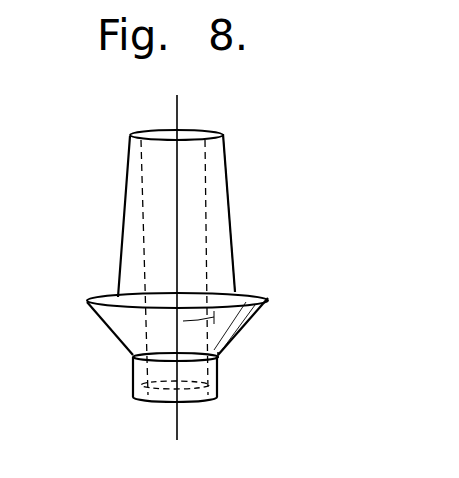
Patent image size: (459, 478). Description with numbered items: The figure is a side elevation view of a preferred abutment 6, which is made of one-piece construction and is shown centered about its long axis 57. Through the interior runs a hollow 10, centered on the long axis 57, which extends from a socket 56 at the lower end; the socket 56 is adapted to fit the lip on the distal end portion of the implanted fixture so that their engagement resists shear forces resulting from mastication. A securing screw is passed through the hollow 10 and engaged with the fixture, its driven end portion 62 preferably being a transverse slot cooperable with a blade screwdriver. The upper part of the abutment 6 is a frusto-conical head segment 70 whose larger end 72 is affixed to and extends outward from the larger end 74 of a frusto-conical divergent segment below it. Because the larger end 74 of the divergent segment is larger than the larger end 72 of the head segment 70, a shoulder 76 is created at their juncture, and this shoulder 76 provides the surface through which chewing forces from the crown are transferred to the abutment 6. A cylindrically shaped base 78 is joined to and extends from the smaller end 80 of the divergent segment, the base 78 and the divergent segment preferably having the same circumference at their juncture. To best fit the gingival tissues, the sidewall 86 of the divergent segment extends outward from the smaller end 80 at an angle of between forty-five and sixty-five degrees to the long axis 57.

The abutment 6 is at (105, 177).
The hollow 10 is at (205, 226).
The socket 56 is at (125, 392).
The long axis 57 is at (177, 118).
The driven end portion 62 is at (249, 322).
The head segment 70 is at (233, 250).
The larger end of head segment 72 is at (237, 278).
The larger end of divergent segment 74 is at (265, 300).
The shoulder 76 is at (96, 296).
The cylindrically shaped base 78 is at (221, 377).
The smaller end of divergent segment 80 is at (222, 358).
The sidewall of divergent segment 86 is at (222, 349).